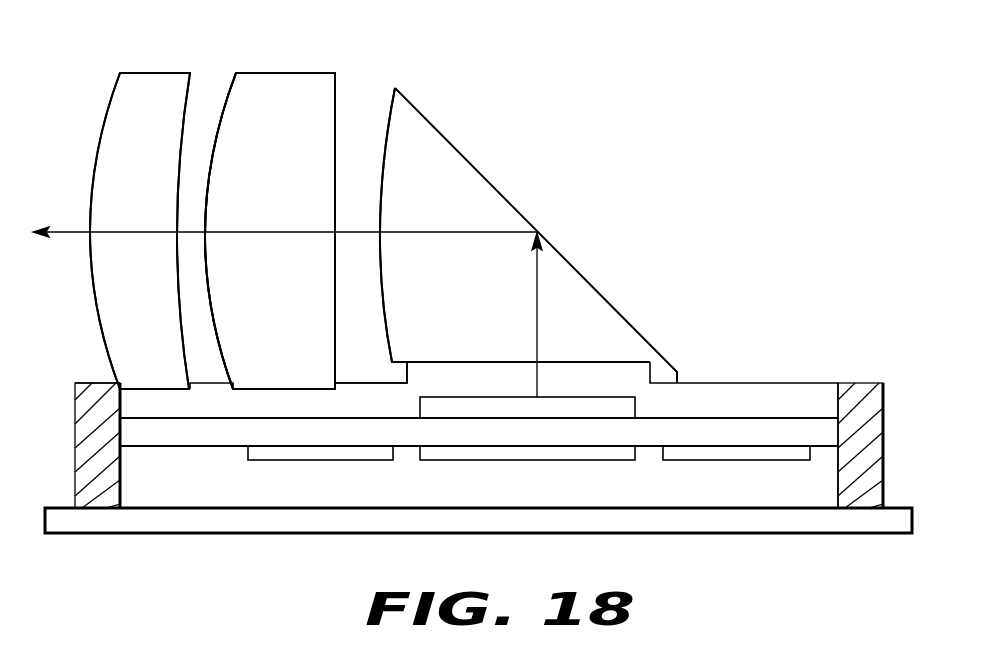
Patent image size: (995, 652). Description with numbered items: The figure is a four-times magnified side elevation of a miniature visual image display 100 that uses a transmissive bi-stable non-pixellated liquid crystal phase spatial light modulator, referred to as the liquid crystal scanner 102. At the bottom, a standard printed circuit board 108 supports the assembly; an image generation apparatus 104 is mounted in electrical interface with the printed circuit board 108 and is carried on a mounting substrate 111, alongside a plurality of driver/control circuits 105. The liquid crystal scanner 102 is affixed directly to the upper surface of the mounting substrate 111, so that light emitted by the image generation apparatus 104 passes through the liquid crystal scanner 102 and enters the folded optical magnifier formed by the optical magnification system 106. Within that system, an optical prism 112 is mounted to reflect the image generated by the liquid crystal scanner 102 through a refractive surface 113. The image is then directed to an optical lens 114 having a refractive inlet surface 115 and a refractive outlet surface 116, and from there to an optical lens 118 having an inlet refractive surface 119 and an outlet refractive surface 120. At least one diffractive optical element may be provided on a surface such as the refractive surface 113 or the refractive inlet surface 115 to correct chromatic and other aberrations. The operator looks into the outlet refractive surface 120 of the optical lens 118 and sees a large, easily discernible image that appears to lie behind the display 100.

The miniature visual image display 100 is at (334, 618).
The liquid crystal scanner 102 is at (637, 405).
The image generation apparatus 104 is at (518, 462).
The driver/control circuits 105 is at (315, 462).
The optical magnification system 106 is at (555, 156).
The printed circuit board 108 is at (758, 534).
The mounting substrate 111 is at (183, 443).
The optical prism 112 is at (448, 283).
The refractive surface 113 is at (391, 110).
The optical lens 114 is at (289, 282).
The refractive inlet surface 115 is at (337, 338).
The refractive outlet surface 116 is at (233, 79).
The optical lens 118 is at (151, 282).
The inlet refractive surface 119 is at (178, 190).
The outlet refractive surface 120 is at (112, 104).